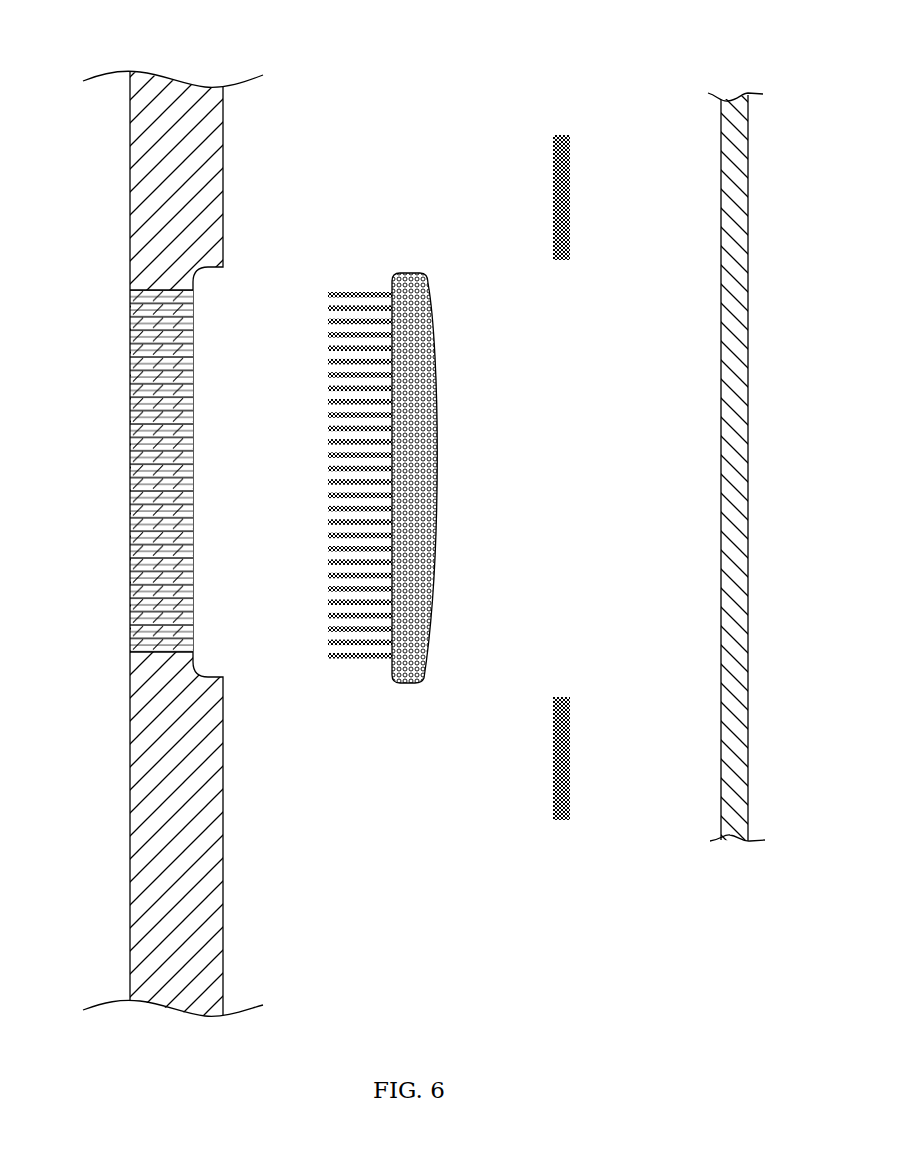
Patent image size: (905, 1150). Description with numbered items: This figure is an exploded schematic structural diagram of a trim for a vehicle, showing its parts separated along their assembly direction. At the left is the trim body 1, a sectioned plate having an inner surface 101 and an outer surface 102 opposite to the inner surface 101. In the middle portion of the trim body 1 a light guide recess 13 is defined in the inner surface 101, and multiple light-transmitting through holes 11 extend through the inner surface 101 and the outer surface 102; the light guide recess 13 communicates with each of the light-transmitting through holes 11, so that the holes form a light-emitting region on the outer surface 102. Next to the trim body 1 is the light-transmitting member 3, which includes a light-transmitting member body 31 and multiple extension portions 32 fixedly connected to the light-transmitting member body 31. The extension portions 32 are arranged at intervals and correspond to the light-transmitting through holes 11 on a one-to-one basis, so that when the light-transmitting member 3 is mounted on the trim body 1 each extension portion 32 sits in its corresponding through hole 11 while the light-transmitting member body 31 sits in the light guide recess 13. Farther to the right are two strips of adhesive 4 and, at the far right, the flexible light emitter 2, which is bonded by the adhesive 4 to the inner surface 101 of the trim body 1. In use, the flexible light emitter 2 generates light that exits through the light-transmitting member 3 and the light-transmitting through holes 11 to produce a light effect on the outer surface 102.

The trim body 1 is at (178, 137).
The light-transmitting through holes 11 is at (140, 382).
The light guide recess 13 is at (208, 487).
The inner surface 101 is at (223, 853).
The outer surface 102 is at (130, 853).
The flexible light emitter 2 is at (721, 168).
The light-transmitting member 3 is at (385, 368).
The light-transmitting member body 31 is at (430, 462).
The extension portions 32 is at (343, 577).
The adhesive 4 is at (557, 136).